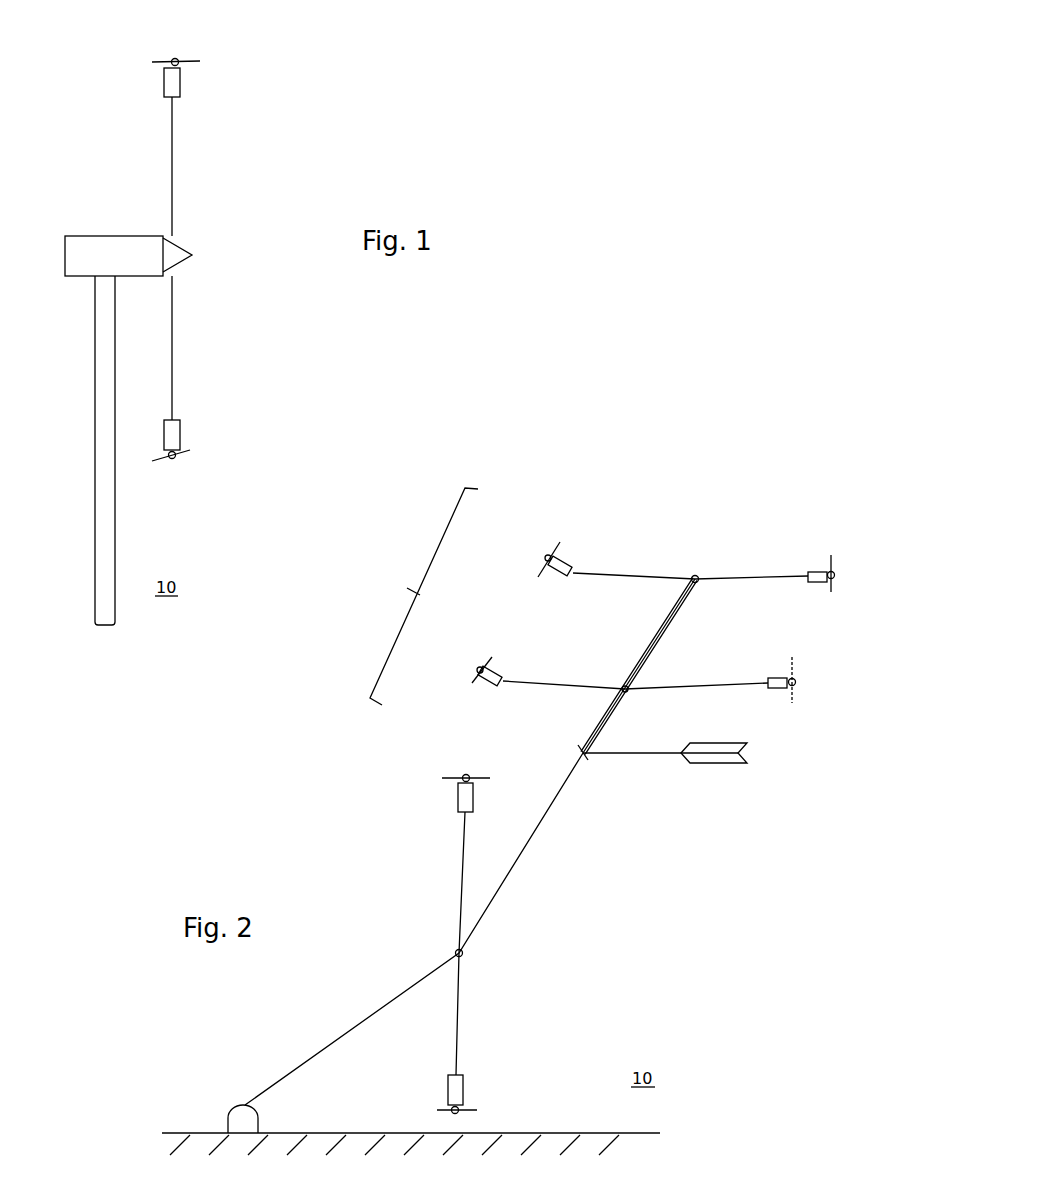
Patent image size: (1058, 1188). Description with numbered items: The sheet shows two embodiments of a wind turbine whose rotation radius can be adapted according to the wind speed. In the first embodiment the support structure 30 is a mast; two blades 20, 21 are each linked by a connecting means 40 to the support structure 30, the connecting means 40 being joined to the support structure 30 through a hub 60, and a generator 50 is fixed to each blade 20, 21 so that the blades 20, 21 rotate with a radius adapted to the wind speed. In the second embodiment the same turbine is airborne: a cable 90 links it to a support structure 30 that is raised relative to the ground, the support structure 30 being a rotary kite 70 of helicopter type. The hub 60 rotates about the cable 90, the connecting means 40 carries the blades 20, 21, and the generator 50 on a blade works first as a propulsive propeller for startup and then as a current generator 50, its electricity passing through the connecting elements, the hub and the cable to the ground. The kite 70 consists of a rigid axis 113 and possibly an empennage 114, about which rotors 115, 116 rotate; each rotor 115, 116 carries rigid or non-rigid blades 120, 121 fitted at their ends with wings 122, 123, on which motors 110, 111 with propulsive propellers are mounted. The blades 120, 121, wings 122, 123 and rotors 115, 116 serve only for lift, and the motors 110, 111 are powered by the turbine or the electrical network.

In FIG. 1, the blade 20 is at (180, 77).
In FIG. 2, the blade 20 is at (458, 800).
In FIG. 1, the blade 21 is at (180, 428).
In FIG. 2, the blade 21 is at (463, 1095).
In FIG. 1, the support structure 30 is at (95, 345).
In FIG. 1, the connecting means 40 is at (172, 170).
In FIG. 2, the connecting means 40 is at (463, 870).
In FIG. 1, the generator 50 is at (175, 58).
In FIG. 2, the generator 50 is at (466, 774).
In FIG. 1, the hub 60 is at (182, 255).
In FIG. 2, the hub 60 is at (466, 955).
In FIG. 2, the rotary kite 70 is at (424, 596).
In FIG. 2, the cable 90 is at (540, 825).
In FIG. 2, the motor 110 is at (548, 555).
In FIG. 2, the motor 111 is at (835, 576).
In FIG. 2, the rigid axis 113 is at (583, 750).
In FIG. 2, the empennage 114 is at (700, 763).
In FIG. 2, the rotor 115 is at (625, 682).
In FIG. 2, the rotor 116 is at (696, 575).
In FIG. 2, the blade 120 is at (635, 573).
In FIG. 2, the blade 121 is at (760, 577).
In FIG. 2, the wing 122 is at (568, 569).
In FIG. 2, the wing 123 is at (820, 572).